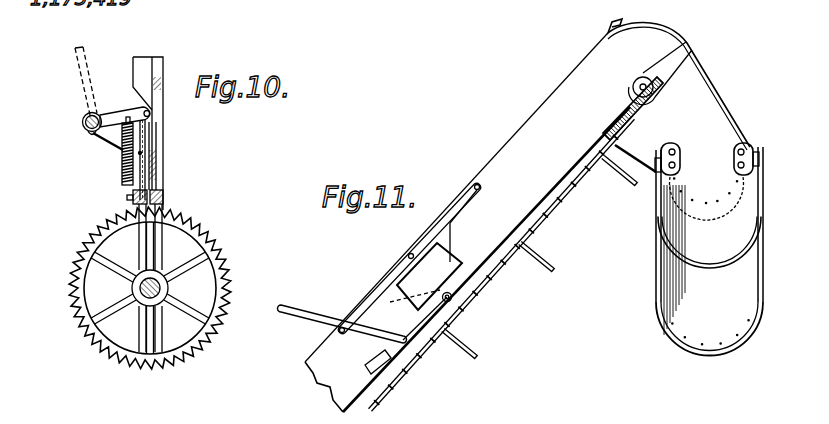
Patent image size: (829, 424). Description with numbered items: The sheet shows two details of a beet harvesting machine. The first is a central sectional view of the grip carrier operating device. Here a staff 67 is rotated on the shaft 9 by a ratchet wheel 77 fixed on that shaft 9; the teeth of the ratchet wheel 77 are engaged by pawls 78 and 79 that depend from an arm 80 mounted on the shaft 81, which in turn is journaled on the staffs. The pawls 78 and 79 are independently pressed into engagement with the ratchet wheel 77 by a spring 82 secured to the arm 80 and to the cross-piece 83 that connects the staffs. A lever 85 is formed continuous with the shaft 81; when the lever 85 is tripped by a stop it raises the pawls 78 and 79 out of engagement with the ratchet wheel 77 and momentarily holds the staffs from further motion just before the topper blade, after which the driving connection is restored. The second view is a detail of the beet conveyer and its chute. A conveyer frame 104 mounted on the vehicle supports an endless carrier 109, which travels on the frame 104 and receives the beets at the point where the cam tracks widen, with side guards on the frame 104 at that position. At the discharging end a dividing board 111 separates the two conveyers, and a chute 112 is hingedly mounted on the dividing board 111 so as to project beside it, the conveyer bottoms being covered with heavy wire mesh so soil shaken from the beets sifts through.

In FIG. 10, the shaft 9 is at (158, 287).
In FIG. 10, the staff 67 is at (143, 68).
In FIG. 10, the ratchet wheel 77 is at (207, 252).
In FIG. 10, the pawl 78 is at (153, 175).
In FIG. 10, the pawl 79 is at (140, 157).
In FIG. 10, the arm 80 is at (115, 114).
In FIG. 10, the shaft 81 is at (83, 121).
In FIG. 10, the spring 82 is at (125, 172).
In FIG. 10, the cross-piece 83 is at (163, 193).
In FIG. 10, the lever 85 is at (77, 72).
In FIG. 11, the conveyer frame 104 is at (505, 150).
In FIG. 11, the endless carrier 109 is at (493, 285).
In FIG. 11, the dividing board 111 is at (698, 97).
In FIG. 11, the chute 112 is at (695, 317).